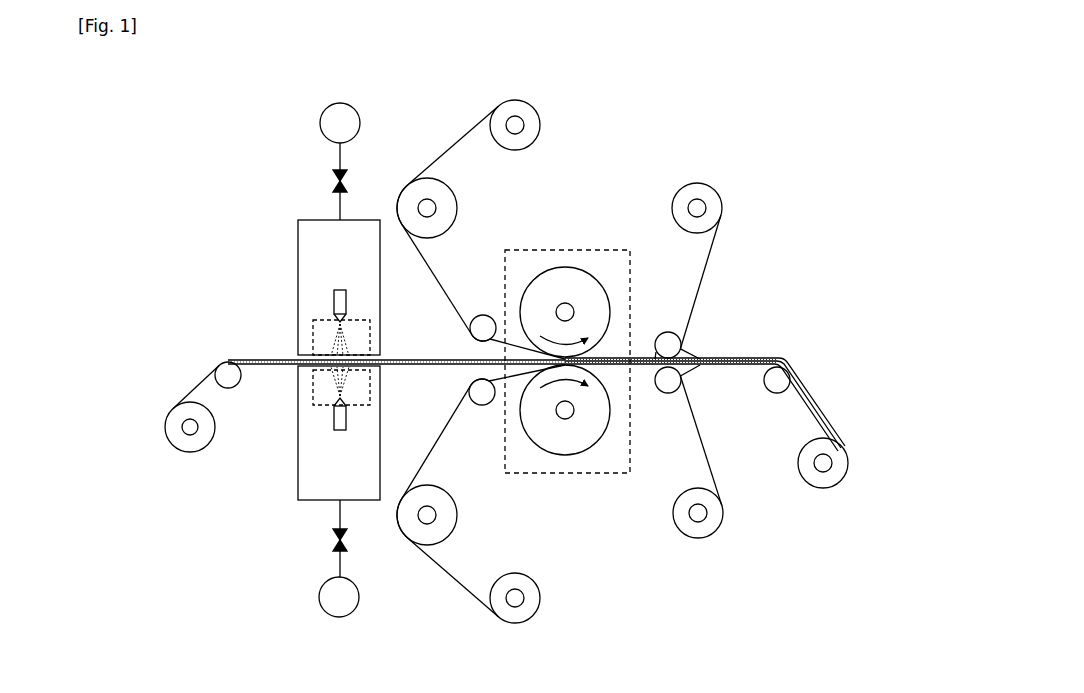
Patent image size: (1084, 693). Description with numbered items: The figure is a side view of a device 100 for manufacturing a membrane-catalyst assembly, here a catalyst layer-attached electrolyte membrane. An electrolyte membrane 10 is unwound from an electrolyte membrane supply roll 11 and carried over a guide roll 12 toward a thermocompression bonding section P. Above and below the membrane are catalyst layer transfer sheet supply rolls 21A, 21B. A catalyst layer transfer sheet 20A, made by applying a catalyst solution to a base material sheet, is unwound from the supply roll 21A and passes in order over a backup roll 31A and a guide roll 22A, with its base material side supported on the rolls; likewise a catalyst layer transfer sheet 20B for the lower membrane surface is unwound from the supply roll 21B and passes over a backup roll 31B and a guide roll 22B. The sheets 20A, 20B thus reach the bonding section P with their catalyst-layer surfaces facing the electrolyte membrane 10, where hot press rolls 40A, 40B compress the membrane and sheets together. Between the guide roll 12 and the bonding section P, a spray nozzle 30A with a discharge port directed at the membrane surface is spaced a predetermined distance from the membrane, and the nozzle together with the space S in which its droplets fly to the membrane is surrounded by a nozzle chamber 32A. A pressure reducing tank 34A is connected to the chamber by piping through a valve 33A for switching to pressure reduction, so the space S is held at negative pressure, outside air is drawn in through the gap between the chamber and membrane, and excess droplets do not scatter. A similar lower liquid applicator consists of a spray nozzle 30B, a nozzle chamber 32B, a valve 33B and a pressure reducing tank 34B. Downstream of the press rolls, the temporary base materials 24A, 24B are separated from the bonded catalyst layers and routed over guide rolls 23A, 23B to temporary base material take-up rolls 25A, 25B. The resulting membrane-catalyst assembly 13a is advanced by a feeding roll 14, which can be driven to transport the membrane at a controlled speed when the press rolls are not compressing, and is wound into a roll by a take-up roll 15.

The device for manufacturing membrane-catalyst assembly 100 is at (705, 101).
The electrolyte membrane 10 is at (245, 358).
The electrolyte membrane supply roll 11 is at (165, 427).
The guide roll 12 is at (235, 388).
The membrane-catalyst assembly 13a is at (745, 357).
The feeding roll 14 is at (770, 395).
The take-up roll 15 is at (848, 463).
The catalyst layer transfer sheet 20A is at (462, 135).
The catalyst layer transfer sheet 20B is at (452, 586).
The catalyst layer transfer sheet supply roll 21A is at (530, 104).
The catalyst layer transfer sheet supply roll 21B is at (530, 617).
The guide roll 22A is at (482, 315).
The guide roll 22B is at (482, 407).
The guide roll 23A is at (666, 328).
The guide roll 23B is at (666, 394).
The temporary base material 24A is at (714, 262).
The temporary base material 24B is at (712, 469).
The temporary base material take-up roll 25A is at (723, 202).
The temporary base material take-up roll 25B is at (723, 530).
The spray nozzle 30A is at (340, 288).
The spray nozzle 30B is at (340, 433).
The backup roll 31A is at (457, 208).
The backup roll 31B is at (457, 534).
The nozzle chamber 32A is at (298, 234).
The nozzle chamber 32B is at (298, 495).
The valve 33A is at (333, 182).
The valve 33B is at (331, 541).
The pressure reducing tank 34A is at (317, 118).
The pressure reducing tank 34B is at (316, 605).
The hot press roll 40A is at (566, 248).
The hot press roll 40B is at (565, 474).
The thermocompression bonding section P is at (600, 246).
The space S is at (378, 334).